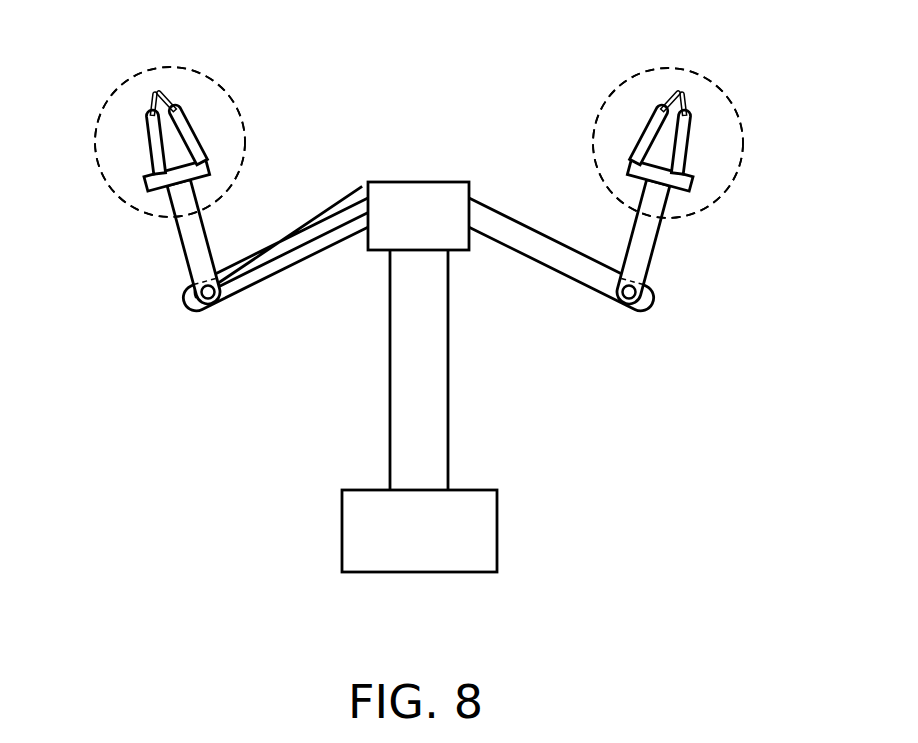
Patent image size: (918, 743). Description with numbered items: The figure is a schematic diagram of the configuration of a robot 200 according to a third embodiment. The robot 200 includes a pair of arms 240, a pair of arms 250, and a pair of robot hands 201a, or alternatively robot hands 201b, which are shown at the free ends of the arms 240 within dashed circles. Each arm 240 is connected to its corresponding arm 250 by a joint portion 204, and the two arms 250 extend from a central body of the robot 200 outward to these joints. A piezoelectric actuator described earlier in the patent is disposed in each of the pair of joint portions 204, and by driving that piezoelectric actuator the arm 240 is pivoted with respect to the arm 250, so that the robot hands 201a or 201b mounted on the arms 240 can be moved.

The robot 200 is at (318, 398).
The robot hand 201a is at (212, 64).
The robot hand 201b is at (419, 142).
The joint portion 204 is at (197, 298).
The arm 240 is at (198, 258).
The arm 250 is at (260, 270).